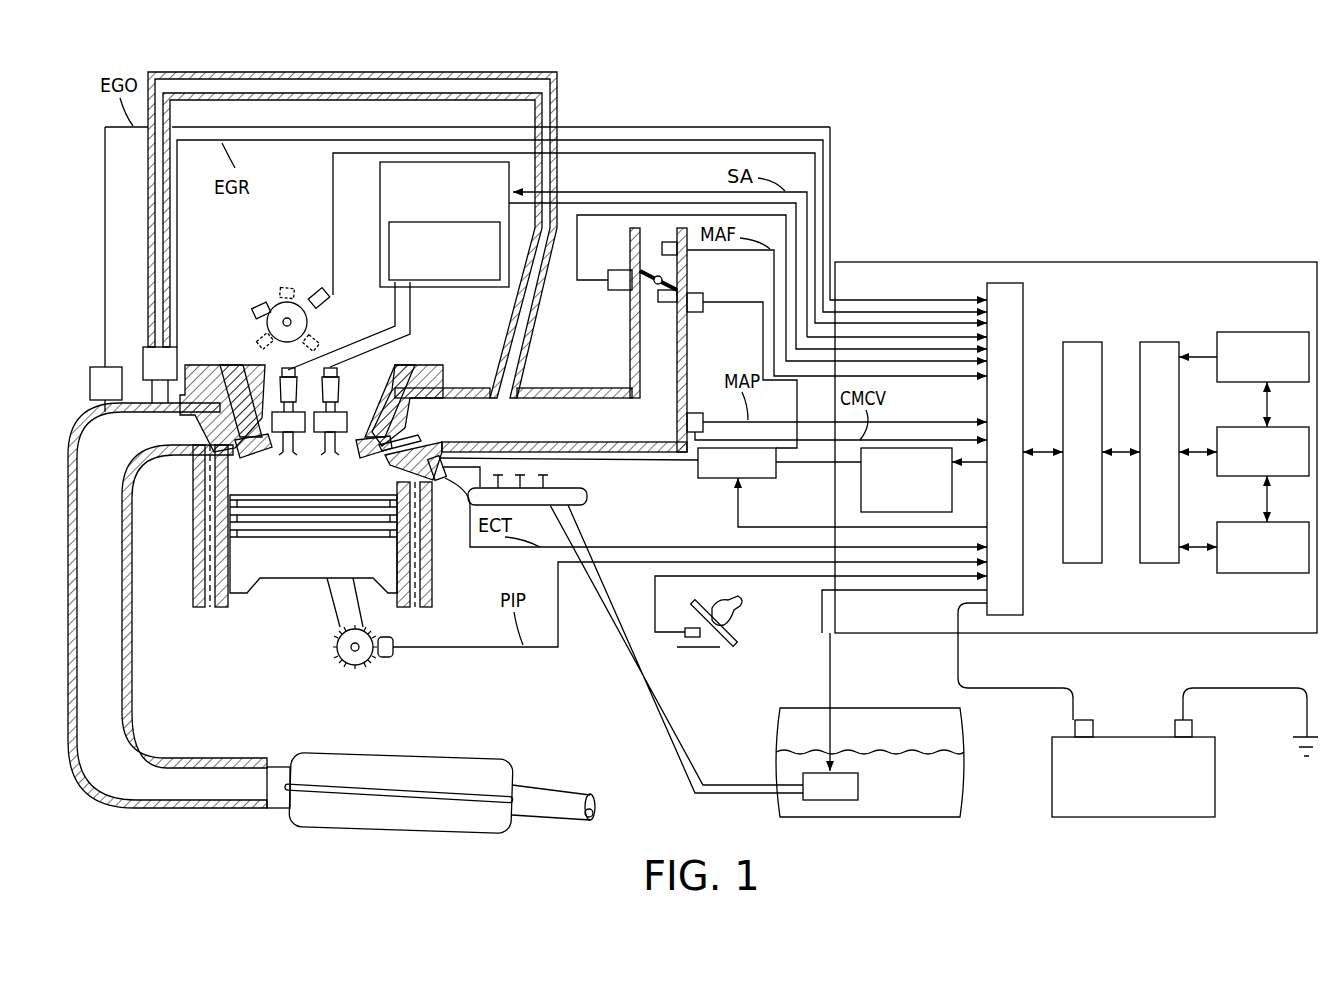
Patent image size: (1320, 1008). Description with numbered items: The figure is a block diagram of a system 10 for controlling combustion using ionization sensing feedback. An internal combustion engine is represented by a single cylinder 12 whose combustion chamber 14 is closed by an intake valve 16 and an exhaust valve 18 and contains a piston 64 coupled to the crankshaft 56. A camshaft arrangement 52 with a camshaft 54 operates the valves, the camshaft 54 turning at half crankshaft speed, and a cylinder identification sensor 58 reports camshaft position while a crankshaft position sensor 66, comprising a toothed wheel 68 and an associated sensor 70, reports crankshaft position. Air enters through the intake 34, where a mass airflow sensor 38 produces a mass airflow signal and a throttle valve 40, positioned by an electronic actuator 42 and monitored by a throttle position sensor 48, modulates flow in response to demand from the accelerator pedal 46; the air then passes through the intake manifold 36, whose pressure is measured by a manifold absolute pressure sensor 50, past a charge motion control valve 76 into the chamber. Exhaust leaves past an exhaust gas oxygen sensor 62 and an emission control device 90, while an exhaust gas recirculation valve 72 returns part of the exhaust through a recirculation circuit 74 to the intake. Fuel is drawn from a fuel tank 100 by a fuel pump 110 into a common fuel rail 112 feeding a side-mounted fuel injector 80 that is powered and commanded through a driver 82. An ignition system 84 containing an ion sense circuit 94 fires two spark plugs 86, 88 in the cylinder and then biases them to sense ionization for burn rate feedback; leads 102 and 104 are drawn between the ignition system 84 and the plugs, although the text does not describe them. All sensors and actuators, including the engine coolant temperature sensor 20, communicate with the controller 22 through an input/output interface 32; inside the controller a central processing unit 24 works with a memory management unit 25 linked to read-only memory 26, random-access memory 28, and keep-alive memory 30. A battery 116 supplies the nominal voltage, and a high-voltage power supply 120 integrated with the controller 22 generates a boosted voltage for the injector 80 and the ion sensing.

The system 10 is at (240, 252).
The cylinder 12 is at (228, 605).
The combustion chamber 14 is at (215, 493).
The intake valve 16 is at (392, 363).
The exhaust valve 18 is at (238, 445).
The engine coolant temperature sensor 20 is at (470, 552).
The controller 22 is at (1078, 261).
The central processing unit 24 is at (1080, 341).
The memory management unit 25 is at (1157, 341).
The read-only memory 26 is at (1272, 331).
The random-access memory 28 is at (1272, 521).
The keep-alive memory 30 is at (1272, 426).
The input/output interface 32 is at (1023, 580).
The intake 34 is at (640, 360).
The intake manifold 36 is at (580, 407).
The mass airflow sensor 38 is at (668, 242).
The throttle valve 40 is at (650, 291).
The throttle actuator 42 is at (710, 300).
The accelerator pedal 46 is at (718, 645).
The throttle position sensor 48 is at (620, 270).
The manifold absolute pressure sensor 50 is at (695, 412).
The camshaft arrangement 52 is at (240, 296).
The camshaft 54 is at (285, 292).
The crankshaft 56 is at (352, 650).
The cylinder identification sensor 58 is at (305, 277).
The exhaust gas oxygen sensor 62 is at (100, 366).
The piston 64 is at (317, 572).
The crankshaft position sensor 66 is at (364, 682).
The toothed wheel 68 is at (345, 682).
The sensor 70 is at (388, 660).
The EGR valve 72 is at (150, 345).
The EGR circuit 74 is at (438, 88).
The charge motion control valve 76 is at (420, 437).
The fuel injector 80 is at (449, 485).
The driver 82 is at (722, 480).
The ignition system 84 is at (380, 185).
The spark plug 86 is at (350, 385).
The spark plug 88 is at (280, 372).
The emission control device 90 is at (432, 752).
The ion sense circuit 94 is at (477, 282).
The fuel tank 100 is at (963, 762).
The spark plug wire 102 is at (373, 327).
The ion sense wire 104 is at (412, 313).
The fuel pump 110 is at (830, 800).
The fuel rail 112 is at (590, 497).
The battery 116 is at (1133, 818).
The high-voltage power supply 120 is at (858, 485).